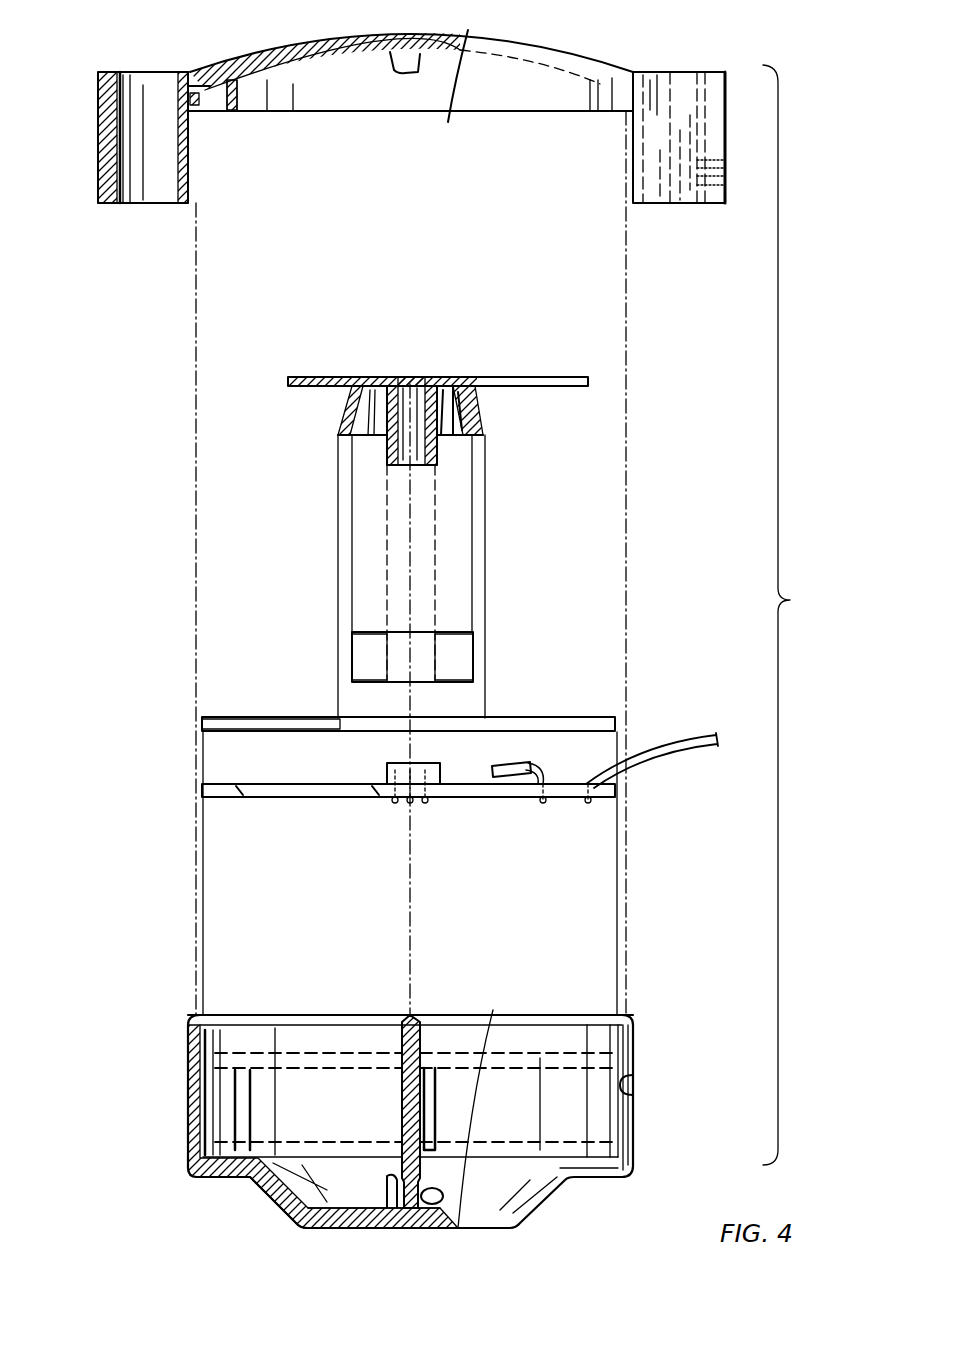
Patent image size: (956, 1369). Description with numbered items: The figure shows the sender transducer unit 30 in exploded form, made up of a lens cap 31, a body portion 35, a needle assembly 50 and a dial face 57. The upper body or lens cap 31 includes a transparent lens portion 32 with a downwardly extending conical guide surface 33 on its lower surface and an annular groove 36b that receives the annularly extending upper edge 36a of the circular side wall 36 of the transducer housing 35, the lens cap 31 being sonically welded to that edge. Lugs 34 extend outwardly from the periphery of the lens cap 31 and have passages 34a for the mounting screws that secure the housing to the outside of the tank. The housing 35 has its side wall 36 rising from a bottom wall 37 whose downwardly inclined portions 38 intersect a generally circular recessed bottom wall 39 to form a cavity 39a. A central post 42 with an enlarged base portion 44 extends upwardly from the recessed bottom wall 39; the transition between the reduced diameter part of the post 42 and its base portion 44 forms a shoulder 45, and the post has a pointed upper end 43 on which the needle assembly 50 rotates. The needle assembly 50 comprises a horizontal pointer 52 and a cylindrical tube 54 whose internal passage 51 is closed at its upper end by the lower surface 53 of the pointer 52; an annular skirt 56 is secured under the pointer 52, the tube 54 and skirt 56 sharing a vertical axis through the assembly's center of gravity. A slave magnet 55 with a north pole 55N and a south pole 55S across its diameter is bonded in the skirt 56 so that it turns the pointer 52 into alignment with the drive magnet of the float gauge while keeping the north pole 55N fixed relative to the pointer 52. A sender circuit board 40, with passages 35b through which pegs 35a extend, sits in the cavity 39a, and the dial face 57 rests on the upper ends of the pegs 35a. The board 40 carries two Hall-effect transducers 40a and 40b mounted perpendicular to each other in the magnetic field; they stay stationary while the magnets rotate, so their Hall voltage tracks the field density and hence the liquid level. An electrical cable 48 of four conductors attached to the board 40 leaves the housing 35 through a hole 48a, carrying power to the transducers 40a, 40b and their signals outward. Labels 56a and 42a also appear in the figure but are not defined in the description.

The sender transducer unit 30 is at (805, 615).
The lens cap 31 is at (200, 66).
The transparent lens portion 32 is at (310, 45).
The conical guide surface 33 is at (392, 55).
The lugs 34 is at (100, 196).
The passages 34a is at (147, 180).
The annular groove 36b is at (200, 108).
The needle assembly 50 is at (442, 521).
The internal passage 51 is at (399, 468).
The pointer 52 is at (548, 386).
The lower surface of pointer 53 is at (412, 384).
The cylindrical tube 54 is at (445, 445).
The annular skirt 56 is at (486, 406).
The slave magnet 55 is at (478, 628).
The south pole 55S is at (350, 652).
The north pole 55N is at (473, 665).
The plate edge 56a is at (340, 716).
The dial face 57 is at (525, 717).
The electrical cable 48 is at (700, 738).
The sender circuit board 40 is at (322, 799).
The Hall-effect transducer 40a is at (440, 764).
The Hall-effect transducer 40b is at (547, 768).
The passages 35b is at (240, 798).
The board slot 42a is at (392, 800).
The circular side wall 36 is at (190, 1075).
The upper edge 36a is at (190, 1018).
The pointed upper end 43 is at (406, 1024).
The central post 42 is at (421, 1032).
The pegs 35a is at (430, 1082).
The hole 48a is at (632, 1075).
The transducer housing 35 is at (648, 1088).
The bottom wall 37 is at (225, 1177).
The downwardly inclined portions 38 is at (282, 1206).
The cavity 39a is at (313, 1220).
The recessed bottom wall 39 is at (333, 1230).
The shoulder 45 is at (388, 1210).
The enlarged base portion 44 is at (458, 1228).